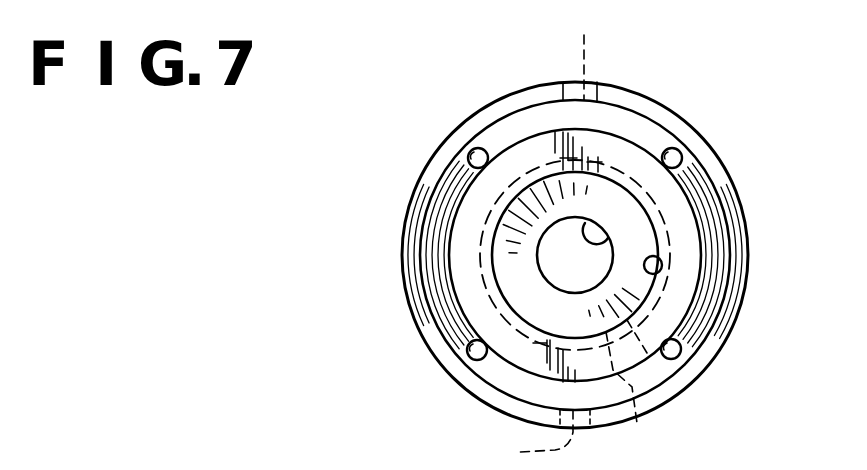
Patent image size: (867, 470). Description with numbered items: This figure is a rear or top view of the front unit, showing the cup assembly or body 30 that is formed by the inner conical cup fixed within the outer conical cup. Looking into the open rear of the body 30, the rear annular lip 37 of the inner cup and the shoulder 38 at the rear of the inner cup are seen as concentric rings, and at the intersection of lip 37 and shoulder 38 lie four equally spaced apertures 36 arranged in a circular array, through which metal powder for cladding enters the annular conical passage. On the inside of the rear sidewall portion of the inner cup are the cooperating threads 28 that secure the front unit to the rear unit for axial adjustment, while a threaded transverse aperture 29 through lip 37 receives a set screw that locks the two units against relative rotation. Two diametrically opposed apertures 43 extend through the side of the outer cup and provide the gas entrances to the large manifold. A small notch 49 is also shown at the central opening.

The cup assembly 30 is at (639, 78).
The apertures 36 is at (478, 148).
The rear annular lip 37 is at (463, 243).
The shoulder 38 is at (440, 290).
The apertures 43 is at (543, 234).
The key notch 49 is at (608, 238).
The threads 28 is at (661, 276).
The threaded transverse aperture 29 is at (637, 423).